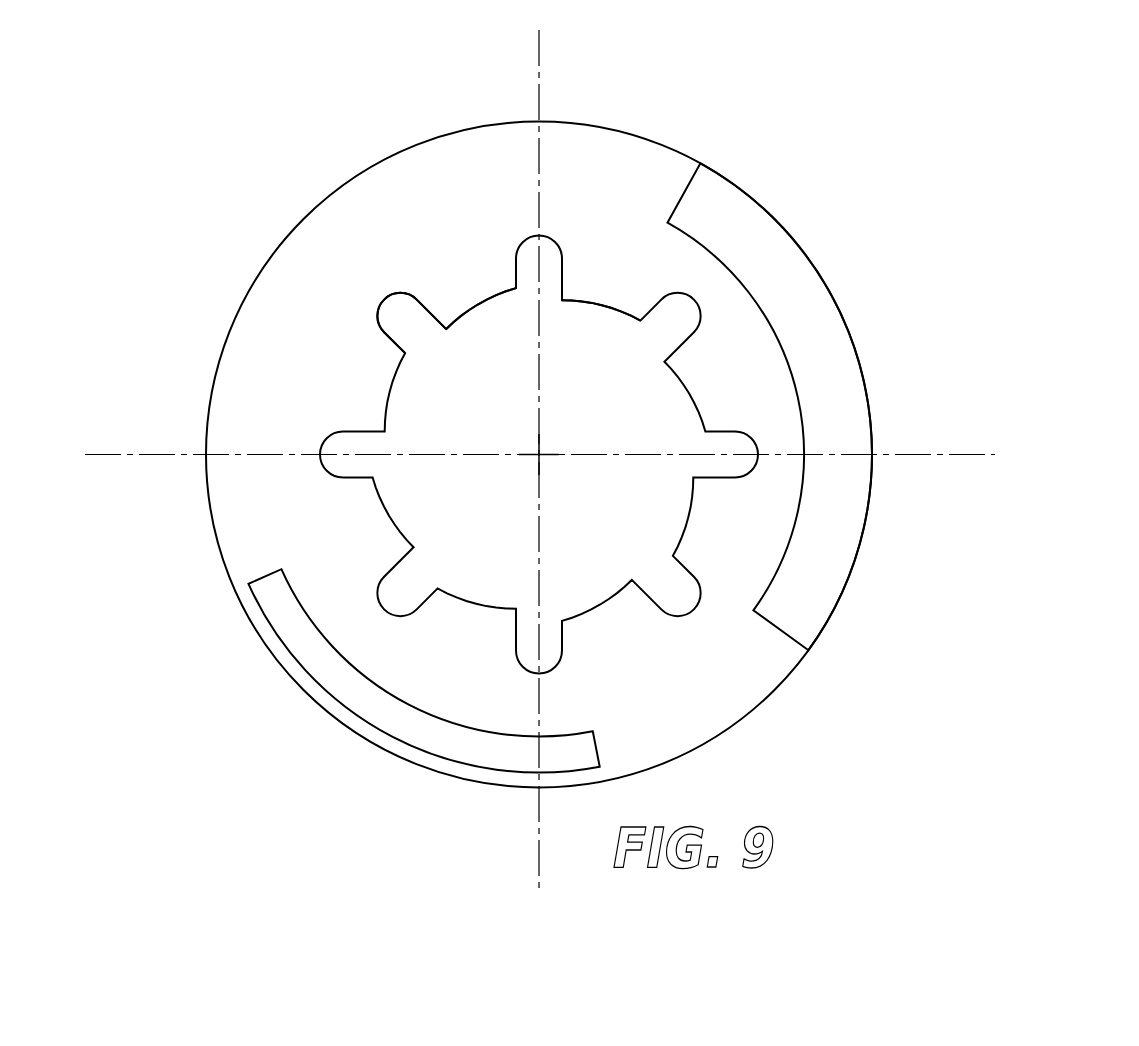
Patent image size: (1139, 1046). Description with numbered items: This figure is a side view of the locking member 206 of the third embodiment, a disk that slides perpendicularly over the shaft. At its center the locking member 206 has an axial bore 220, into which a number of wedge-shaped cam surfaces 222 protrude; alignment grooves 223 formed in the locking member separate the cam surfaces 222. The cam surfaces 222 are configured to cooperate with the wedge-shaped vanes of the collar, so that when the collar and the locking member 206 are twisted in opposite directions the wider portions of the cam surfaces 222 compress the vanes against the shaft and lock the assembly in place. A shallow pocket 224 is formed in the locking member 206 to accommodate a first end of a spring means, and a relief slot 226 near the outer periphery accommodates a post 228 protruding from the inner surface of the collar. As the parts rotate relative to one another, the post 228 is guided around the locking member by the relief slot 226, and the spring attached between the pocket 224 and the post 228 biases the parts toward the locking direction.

The locking member 206 is at (928, 557).
The axial bore 220 is at (410, 420).
The cam surfaces 222 is at (467, 310).
The alignment grooves 223 is at (449, 313).
The shallow pocket 224 is at (680, 198).
The relief slot 226 is at (310, 658).
The post 228 is at (463, 167).